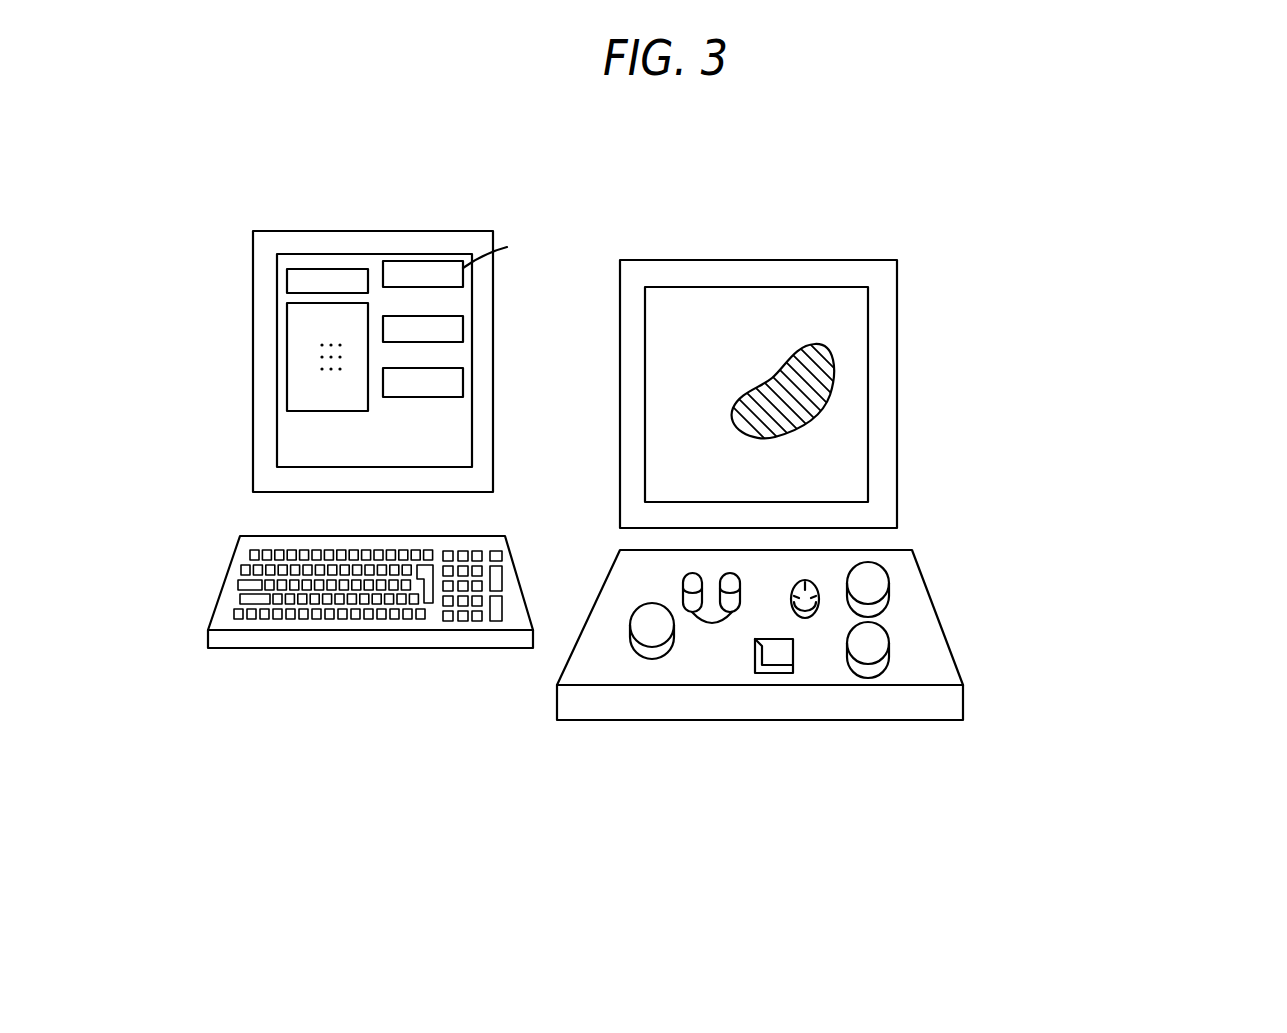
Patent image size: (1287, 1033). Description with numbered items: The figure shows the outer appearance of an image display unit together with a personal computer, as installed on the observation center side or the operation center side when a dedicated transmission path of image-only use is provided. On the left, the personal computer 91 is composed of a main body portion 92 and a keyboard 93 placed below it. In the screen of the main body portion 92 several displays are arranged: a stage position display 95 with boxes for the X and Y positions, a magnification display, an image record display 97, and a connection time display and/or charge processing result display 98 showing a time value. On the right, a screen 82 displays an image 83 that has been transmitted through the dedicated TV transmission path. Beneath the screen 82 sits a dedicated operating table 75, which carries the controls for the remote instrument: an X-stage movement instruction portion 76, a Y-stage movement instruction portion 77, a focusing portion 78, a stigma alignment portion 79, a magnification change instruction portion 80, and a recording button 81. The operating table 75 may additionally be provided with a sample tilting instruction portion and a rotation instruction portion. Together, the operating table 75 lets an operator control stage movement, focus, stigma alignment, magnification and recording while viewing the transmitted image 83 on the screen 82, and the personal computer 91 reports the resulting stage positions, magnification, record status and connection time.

The dedicated operating table 75 is at (973, 685).
The X-stage movement instruction portion 76 is at (650, 628).
The Y-stage movement instruction portion 77 is at (867, 653).
The focusing portion 78 is at (817, 615).
The stigma alignment portion 79 is at (712, 623).
The magnification change instruction portion 80 is at (887, 567).
The recording button 81 is at (775, 660).
The screen 82 is at (843, 287).
The image 83 is at (835, 398).
The personal computer 91 is at (462, 230).
The main body portion 92 is at (253, 277).
The keyboard 93 is at (228, 567).
The stage position display 95 is at (463, 376).
The image record display 97 is at (293, 355).
The connection time display and/or charge processing result display 98 is at (322, 270).